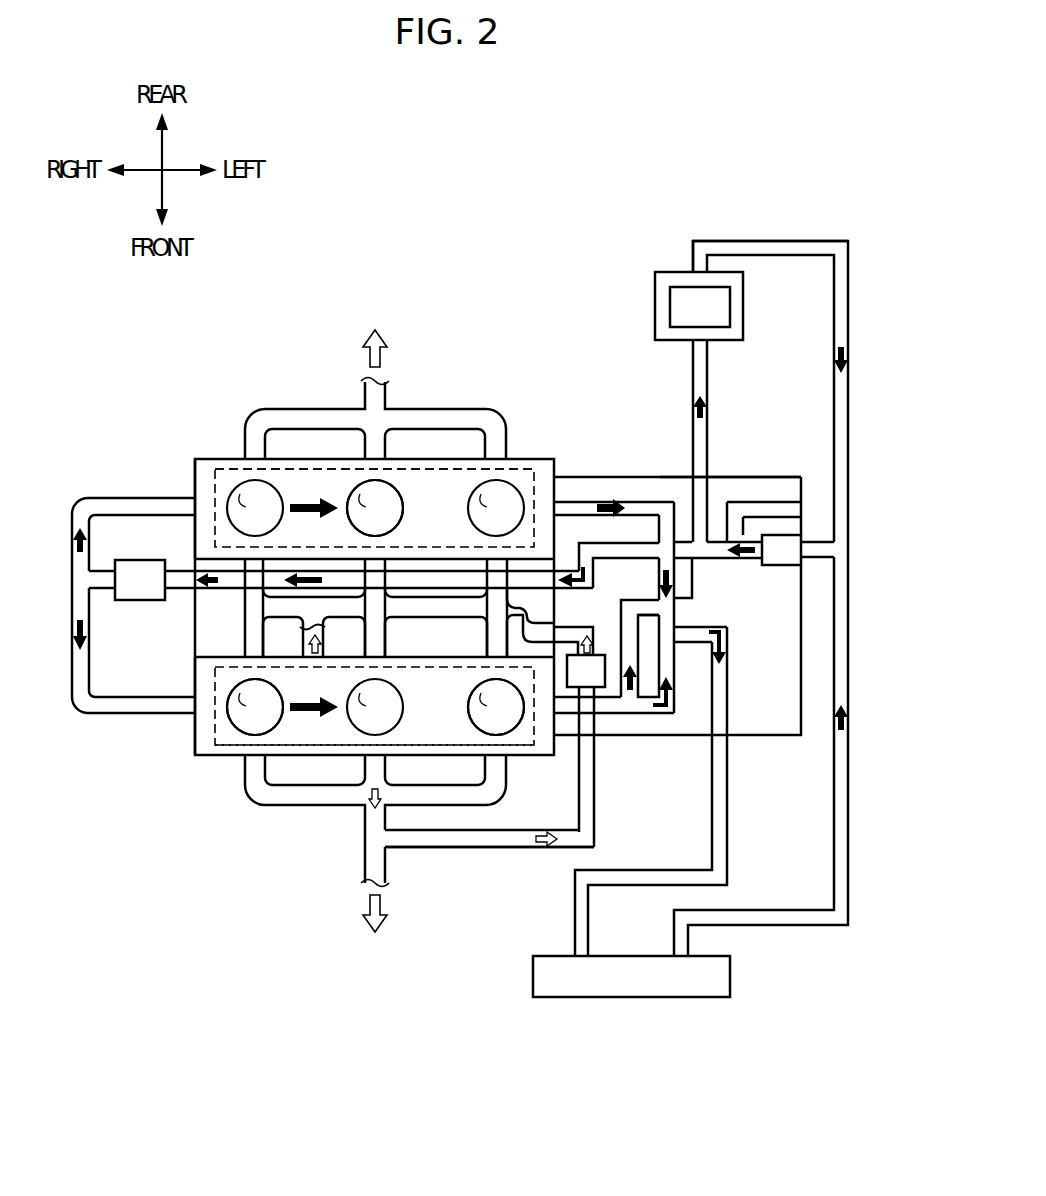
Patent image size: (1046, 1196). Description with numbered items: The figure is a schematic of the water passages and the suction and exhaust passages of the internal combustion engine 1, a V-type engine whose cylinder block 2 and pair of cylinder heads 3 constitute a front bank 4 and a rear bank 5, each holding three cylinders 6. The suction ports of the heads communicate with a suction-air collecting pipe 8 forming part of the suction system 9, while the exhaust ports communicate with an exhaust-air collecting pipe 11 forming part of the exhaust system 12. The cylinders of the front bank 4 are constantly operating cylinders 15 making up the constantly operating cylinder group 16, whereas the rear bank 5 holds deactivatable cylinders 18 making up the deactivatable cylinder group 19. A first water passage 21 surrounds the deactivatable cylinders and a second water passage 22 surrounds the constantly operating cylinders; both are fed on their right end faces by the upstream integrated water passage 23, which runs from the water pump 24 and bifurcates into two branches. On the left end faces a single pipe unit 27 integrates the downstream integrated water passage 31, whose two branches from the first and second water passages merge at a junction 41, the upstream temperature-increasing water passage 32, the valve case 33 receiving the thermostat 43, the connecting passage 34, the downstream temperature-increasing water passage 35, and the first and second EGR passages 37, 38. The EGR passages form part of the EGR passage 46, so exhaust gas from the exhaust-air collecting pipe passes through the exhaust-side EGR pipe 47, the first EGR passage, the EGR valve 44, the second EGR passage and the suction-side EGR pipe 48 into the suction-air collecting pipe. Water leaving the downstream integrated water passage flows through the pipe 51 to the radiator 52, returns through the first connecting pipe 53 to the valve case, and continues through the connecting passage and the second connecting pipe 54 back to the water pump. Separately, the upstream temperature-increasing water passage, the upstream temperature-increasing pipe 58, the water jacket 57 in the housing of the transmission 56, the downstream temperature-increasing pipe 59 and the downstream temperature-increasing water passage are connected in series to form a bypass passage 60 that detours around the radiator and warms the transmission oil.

The internal combustion engine 1 is at (183, 447).
The cylinder block 2 is at (205, 645).
The cylinder head 3 is at (207, 462).
The front bank 4 is at (193, 742).
The rear bank 5 is at (195, 471).
The cylinder 6 is at (243, 732).
The suction-air collecting pipe 8 is at (255, 607).
The suction system 9 is at (338, 620).
The exhaust-air collecting pipe 11 is at (457, 418).
The exhaust system 12 is at (337, 398).
The constantly operating cylinder 15 is at (375, 707).
The constantly operating cylinder group 16 is at (465, 732).
The deactivatable cylinder 18 is at (375, 508).
The deactivatable cylinder group 19 is at (410, 490).
The first water passage 21 is at (292, 470).
The second water passage 22 is at (334, 742).
The upstream integrated water passage 23 is at (90, 710).
The water pump 24 is at (140, 560).
The pipe unit 27 is at (587, 470).
The downstream integrated water passage 31 is at (724, 696).
The upstream temperature-increasing water passage 32 is at (637, 645).
The valve case 33 is at (780, 567).
The connecting passage 34 is at (717, 548).
The downstream temperature-increasing water passage 35 is at (762, 478).
The first EGR passage 37 is at (607, 737).
The second EGR passage 38 is at (576, 627).
The junction 41 is at (667, 648).
The thermostat 43 is at (790, 528).
The EGR valve 44 is at (576, 690).
The EGR passage 46 is at (548, 858).
The exhaust-side EGR pipe 47 is at (505, 840).
The suction-side EGR pipe 48 is at (525, 633).
The pipe 51 is at (722, 831).
The radiator 52 is at (587, 998).
The first connecting pipe 53 is at (789, 918).
The second connecting pipe 54 is at (542, 588).
The transmission 56 is at (724, 307).
The water jacket 57 is at (660, 302).
The upstream temperature-increasing pipe 58 is at (697, 368).
The downstream temperature-increasing pipe 59 is at (780, 247).
The bypass passage 60 is at (682, 248).